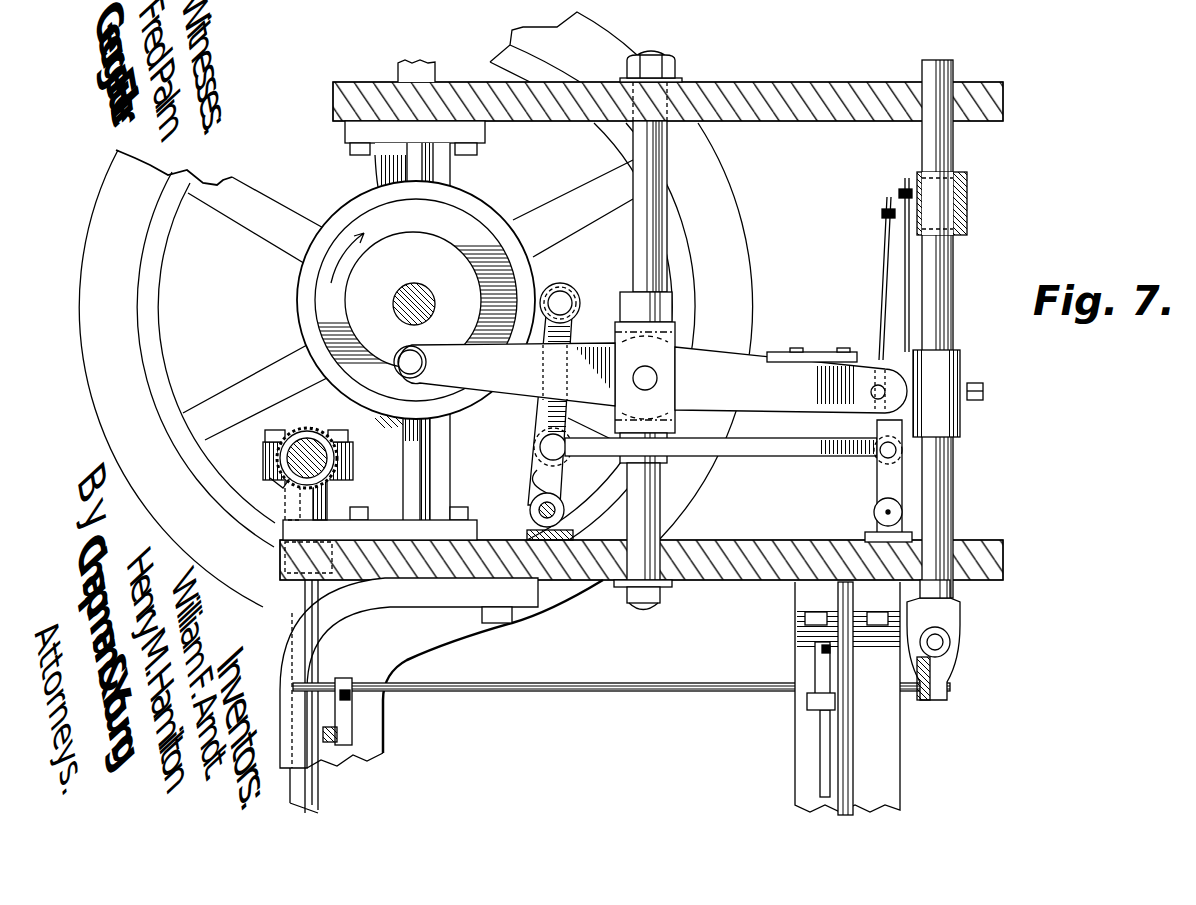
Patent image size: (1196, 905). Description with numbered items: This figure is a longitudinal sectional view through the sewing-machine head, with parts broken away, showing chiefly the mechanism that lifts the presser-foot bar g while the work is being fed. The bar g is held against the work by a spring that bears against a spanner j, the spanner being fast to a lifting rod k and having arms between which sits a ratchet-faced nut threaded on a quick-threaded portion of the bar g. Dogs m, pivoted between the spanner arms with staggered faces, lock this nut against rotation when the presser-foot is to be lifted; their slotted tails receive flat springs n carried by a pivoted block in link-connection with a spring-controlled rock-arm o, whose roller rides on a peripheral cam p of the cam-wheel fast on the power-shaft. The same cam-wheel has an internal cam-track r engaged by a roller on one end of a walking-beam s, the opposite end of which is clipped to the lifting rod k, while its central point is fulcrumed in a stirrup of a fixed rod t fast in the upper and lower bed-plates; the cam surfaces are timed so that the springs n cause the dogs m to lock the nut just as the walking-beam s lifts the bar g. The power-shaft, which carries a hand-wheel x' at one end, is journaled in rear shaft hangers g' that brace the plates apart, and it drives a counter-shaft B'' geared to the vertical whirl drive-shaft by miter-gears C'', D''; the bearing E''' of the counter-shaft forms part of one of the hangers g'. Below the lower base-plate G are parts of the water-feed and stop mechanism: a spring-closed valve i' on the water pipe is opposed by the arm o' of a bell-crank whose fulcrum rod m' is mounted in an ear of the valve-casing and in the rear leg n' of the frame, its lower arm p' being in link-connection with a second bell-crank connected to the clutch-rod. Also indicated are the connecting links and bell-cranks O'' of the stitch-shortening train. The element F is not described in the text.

The top frame bar F is at (527, 121).
The presser-foot bar g is at (416, 297).
The rear shaft hangers g' is at (383, 341).
The internal cam-track r is at (414, 295).
The peripheral cam p is at (421, 300).
The fixed rod t is at (633, 233).
The hand-wheel x' is at (415, 309).
The dogs m is at (876, 204).
The flat springs n is at (875, 269).
The spanner j is at (967, 198).
The lifting rod k is at (955, 298).
The walking-beam s is at (653, 442).
The rock-arm o is at (540, 411).
The counter-shaft B'' is at (289, 475).
The miter-gear C'' is at (306, 442).
The miter-gear D'' is at (263, 488).
The bearing E''' is at (314, 437).
The lower base-plate G is at (450, 575).
The rear leg of the frame n' is at (350, 695).
The lower arm of the bell-crank p' is at (344, 728).
The fulcrum rod m' is at (621, 670).
The connecting links and bell-cranks O'' is at (820, 698).
The valve i' is at (949, 640).
The arm of the bell-crank o' is at (946, 678).